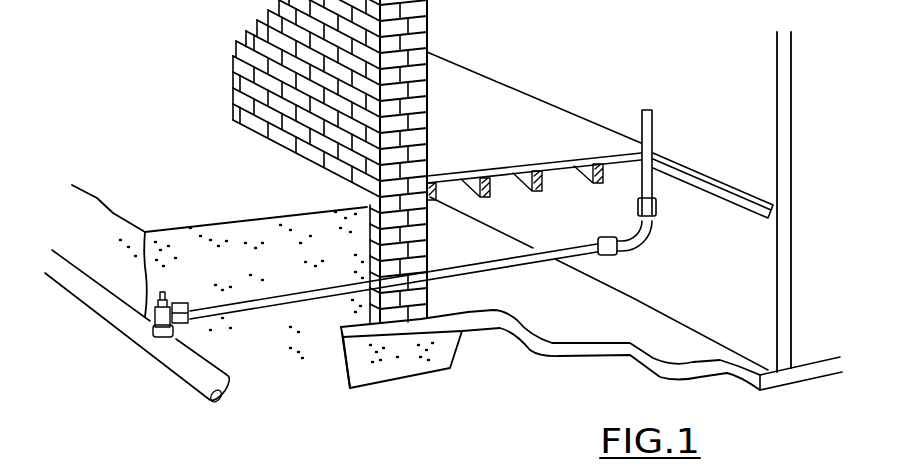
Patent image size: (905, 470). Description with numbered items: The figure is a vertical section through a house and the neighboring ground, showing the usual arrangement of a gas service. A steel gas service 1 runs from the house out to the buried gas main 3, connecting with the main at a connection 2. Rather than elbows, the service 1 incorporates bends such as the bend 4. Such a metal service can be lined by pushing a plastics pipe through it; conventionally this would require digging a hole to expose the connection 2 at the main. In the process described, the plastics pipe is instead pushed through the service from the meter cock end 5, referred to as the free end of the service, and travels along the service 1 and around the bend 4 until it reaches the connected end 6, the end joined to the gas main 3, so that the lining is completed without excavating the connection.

The steel gas service 1 is at (262, 307).
The connection 2 is at (155, 314).
The gas main 3 is at (195, 373).
The bend 4 is at (646, 239).
The meter cock end 5 is at (645, 110).
The connected end 6 is at (160, 328).